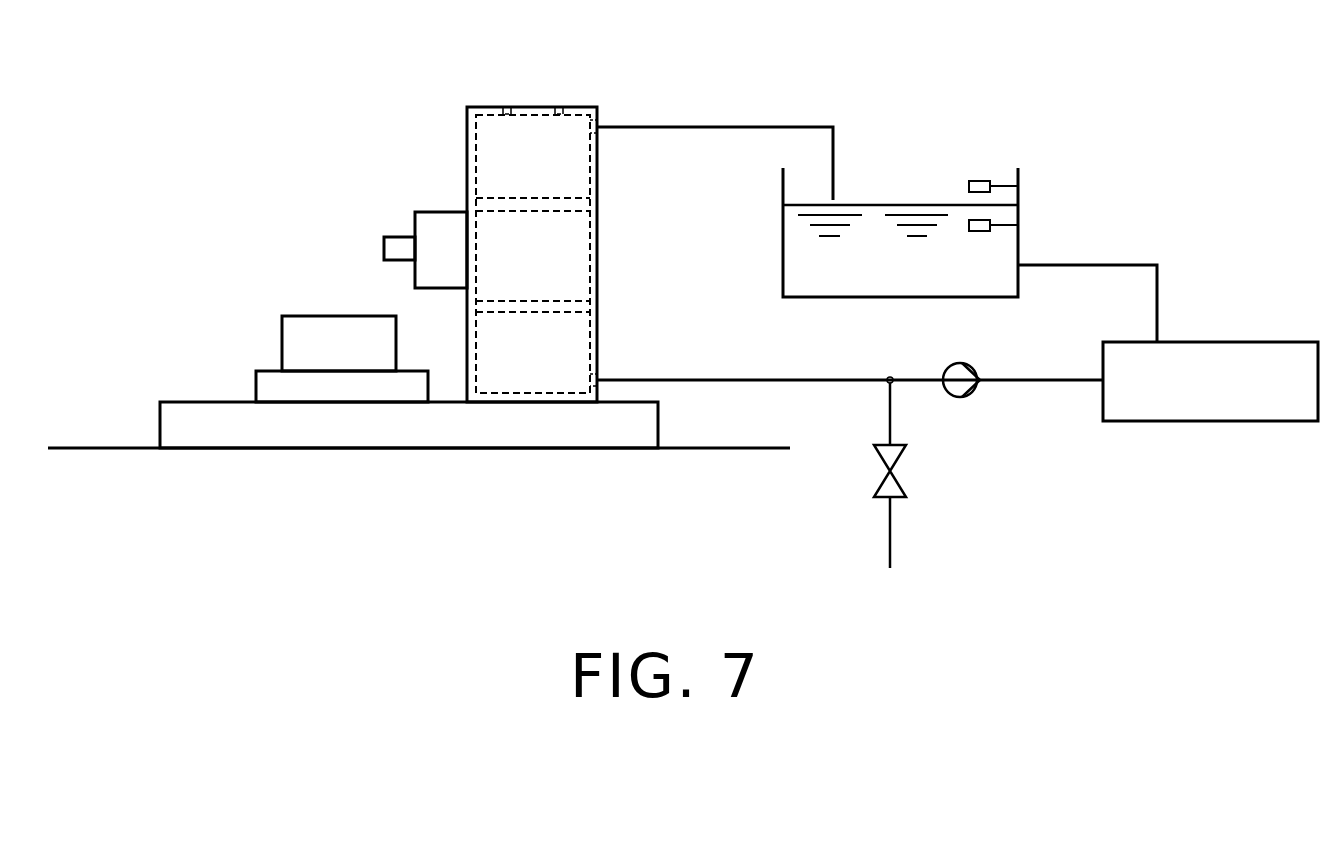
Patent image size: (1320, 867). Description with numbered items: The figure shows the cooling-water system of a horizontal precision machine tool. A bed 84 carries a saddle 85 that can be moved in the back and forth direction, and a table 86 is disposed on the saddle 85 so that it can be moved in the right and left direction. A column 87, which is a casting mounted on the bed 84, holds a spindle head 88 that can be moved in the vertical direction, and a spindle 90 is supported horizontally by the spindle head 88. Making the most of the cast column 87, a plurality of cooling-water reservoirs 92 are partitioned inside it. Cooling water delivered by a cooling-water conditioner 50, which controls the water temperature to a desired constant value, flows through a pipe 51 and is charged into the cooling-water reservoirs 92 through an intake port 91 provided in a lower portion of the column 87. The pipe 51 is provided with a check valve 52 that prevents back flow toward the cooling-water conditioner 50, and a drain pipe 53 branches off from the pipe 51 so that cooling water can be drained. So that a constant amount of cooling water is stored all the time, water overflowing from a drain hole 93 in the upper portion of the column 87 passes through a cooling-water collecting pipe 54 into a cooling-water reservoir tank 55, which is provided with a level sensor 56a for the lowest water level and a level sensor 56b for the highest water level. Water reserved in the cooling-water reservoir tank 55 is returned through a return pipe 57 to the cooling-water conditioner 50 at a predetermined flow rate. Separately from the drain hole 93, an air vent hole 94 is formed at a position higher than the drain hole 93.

The cooling-water conditioner 50 is at (1290, 340).
The pipe 51 is at (809, 378).
The check valve 52 is at (968, 400).
The drain pipe 53 is at (888, 420).
The cooling-water collecting pipe 54 is at (720, 126).
The cooling-water reservoir tank 55 is at (1020, 193).
The level sensor 56a is at (980, 232).
The level sensor 56b is at (975, 179).
The return pipe 57 is at (1158, 300).
The bed 84 is at (160, 425).
The saddle 85 is at (256, 381).
The table 86 is at (282, 342).
The column 87 is at (599, 235).
The spindle head 88 is at (440, 218).
The spindle 90 is at (393, 243).
The intake port 91 is at (599, 378).
The cooling-water reservoirs 92 is at (572, 163).
The drain hole 93 is at (599, 125).
The air vent hole 94 is at (505, 105).